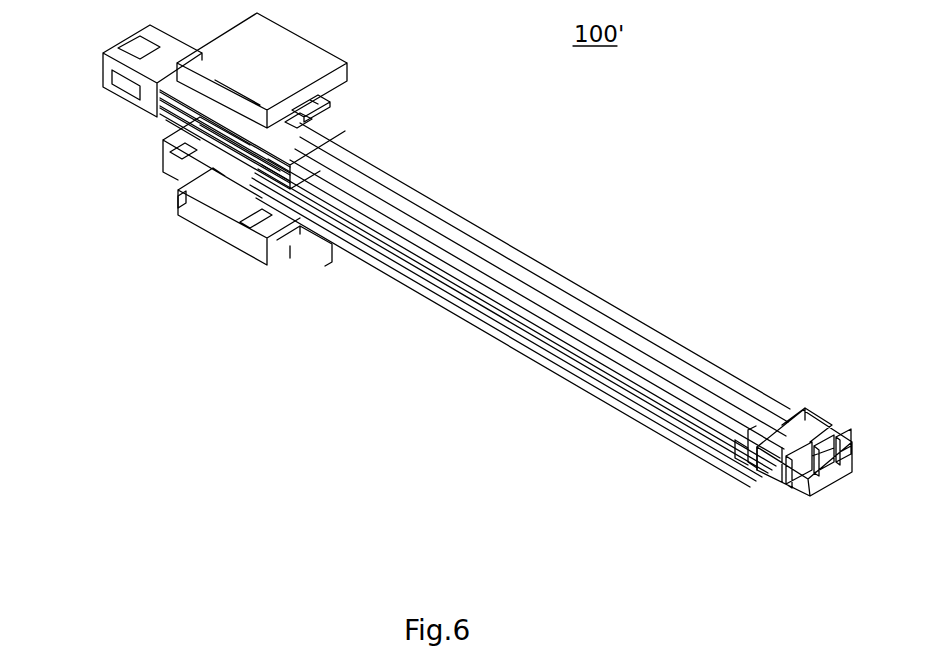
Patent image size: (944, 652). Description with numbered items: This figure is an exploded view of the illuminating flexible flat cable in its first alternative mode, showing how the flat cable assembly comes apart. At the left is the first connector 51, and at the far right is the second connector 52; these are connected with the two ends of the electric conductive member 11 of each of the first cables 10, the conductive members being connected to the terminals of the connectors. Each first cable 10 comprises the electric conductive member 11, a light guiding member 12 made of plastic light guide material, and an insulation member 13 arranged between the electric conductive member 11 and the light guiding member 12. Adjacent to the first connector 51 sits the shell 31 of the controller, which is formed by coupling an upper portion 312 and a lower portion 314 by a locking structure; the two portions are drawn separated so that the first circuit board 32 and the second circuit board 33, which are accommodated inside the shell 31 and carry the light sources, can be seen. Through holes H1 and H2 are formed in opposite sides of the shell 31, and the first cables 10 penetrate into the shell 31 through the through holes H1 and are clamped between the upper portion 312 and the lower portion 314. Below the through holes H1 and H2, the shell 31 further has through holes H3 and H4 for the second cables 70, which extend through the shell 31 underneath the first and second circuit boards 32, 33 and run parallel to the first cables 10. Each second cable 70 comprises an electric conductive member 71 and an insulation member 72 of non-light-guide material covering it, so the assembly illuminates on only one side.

The first connector 51 is at (108, 45).
The first cables 10 is at (55, 132).
The electric conductive member 11 is at (160, 113).
The insulation member 13 is at (195, 115).
The light guiding member 12 is at (190, 133).
The shell 31 is at (285, 145).
The upper portion 312 is at (313, 51).
The lower portion 314 is at (227, 232).
The first circuit board 32 is at (325, 101).
The second circuit board 33 is at (272, 184).
The through holes H1 is at (293, 123).
The through holes H2 is at (183, 183).
The through holes H3 is at (290, 256).
The through holes H4 is at (181, 201).
The second connector 52 is at (800, 408).
The second cables 70 is at (730, 497).
The electric conductive member 71 is at (754, 473).
The insulation member 72 is at (728, 467).